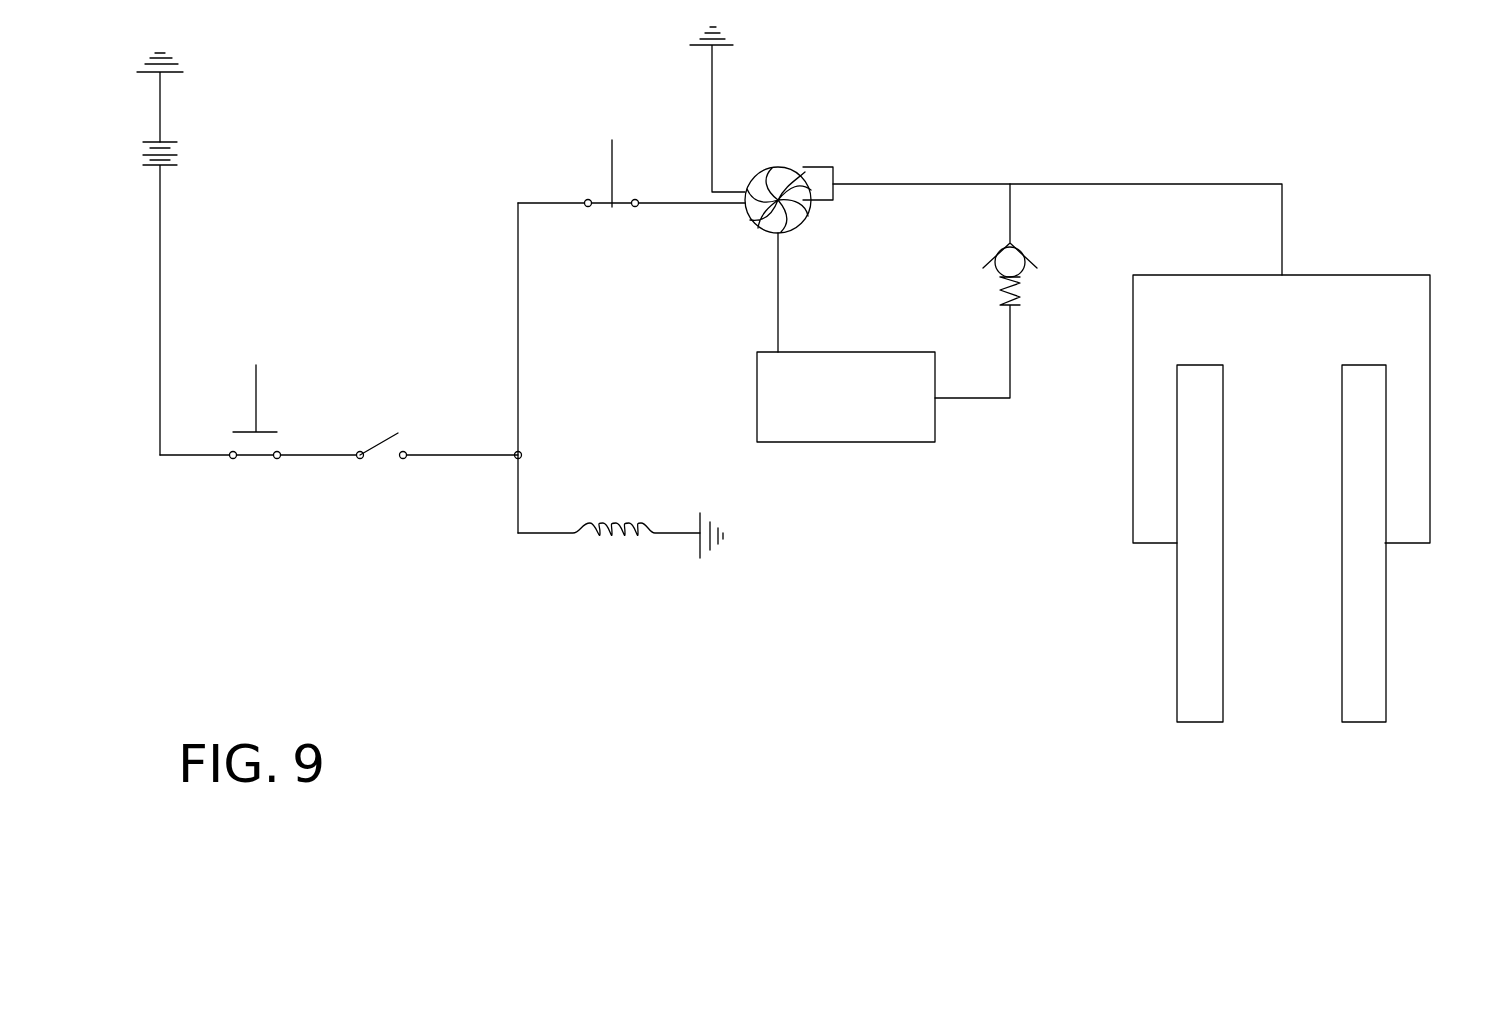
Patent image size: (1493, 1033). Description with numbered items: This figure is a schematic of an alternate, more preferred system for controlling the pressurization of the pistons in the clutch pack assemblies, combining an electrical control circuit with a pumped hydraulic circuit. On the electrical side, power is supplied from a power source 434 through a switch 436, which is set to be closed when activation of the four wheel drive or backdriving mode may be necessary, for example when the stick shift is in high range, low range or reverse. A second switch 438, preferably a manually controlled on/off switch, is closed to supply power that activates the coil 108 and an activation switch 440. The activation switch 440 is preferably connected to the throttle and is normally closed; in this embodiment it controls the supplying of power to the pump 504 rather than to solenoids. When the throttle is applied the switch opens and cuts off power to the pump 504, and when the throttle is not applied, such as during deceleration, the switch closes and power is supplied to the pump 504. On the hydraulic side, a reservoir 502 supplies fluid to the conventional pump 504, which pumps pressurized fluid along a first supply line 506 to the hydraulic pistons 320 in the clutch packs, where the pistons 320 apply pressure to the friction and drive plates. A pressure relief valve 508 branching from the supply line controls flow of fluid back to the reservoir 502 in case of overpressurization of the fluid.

The power source 434 is at (188, 155).
The switch 436 is at (263, 413).
The second switch 438 is at (382, 457).
The activation switch 440 is at (612, 178).
The coil 108 is at (612, 545).
The pump 504 is at (777, 165).
The reservoir 502 is at (833, 420).
The first supply line 506 is at (1137, 184).
The pressure relief valve 508 is at (995, 258).
The hydraulic piston 320 is at (1177, 632).